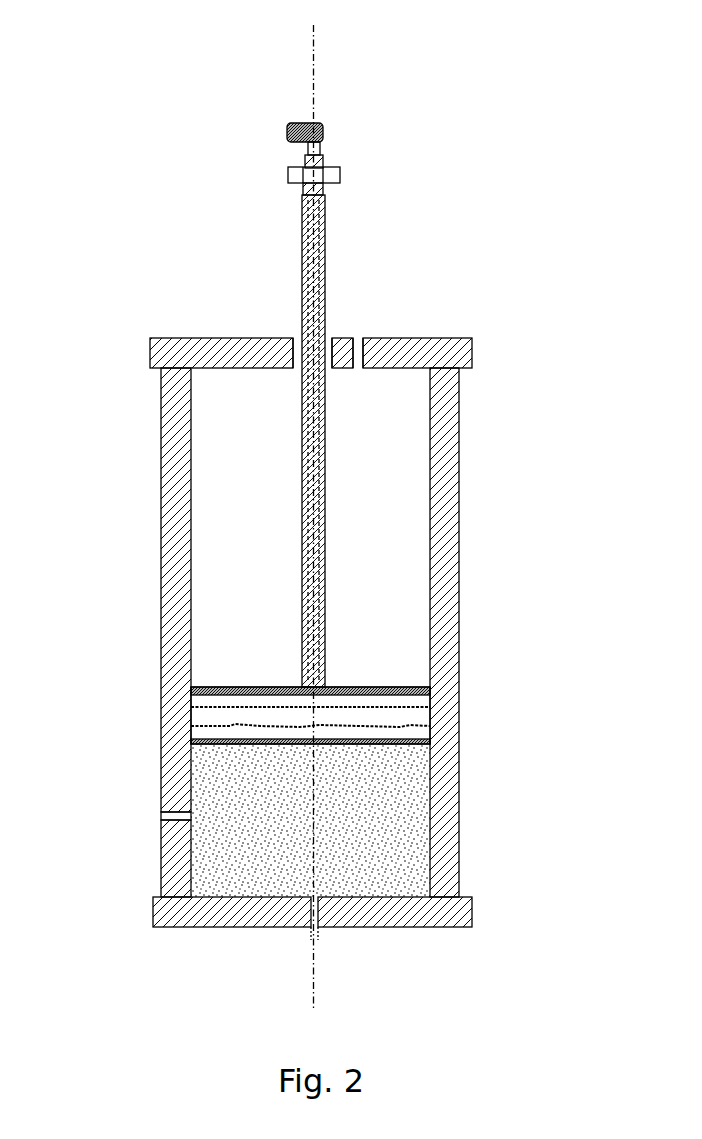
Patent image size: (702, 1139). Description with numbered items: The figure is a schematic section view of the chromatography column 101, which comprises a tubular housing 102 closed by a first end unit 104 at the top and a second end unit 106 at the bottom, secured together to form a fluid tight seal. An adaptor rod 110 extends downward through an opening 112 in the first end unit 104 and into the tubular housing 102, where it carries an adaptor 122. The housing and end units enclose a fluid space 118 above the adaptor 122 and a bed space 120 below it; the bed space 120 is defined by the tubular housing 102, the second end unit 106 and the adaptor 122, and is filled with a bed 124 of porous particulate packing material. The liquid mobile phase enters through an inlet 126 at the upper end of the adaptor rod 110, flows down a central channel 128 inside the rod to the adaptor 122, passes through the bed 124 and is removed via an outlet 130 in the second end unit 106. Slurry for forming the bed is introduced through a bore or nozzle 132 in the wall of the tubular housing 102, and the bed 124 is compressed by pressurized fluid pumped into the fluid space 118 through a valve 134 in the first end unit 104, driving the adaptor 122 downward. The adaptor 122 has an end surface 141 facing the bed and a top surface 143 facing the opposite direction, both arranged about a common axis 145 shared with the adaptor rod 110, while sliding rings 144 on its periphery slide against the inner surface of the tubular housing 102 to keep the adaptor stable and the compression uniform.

The chromatography column 101 is at (370, 141).
The tubular housing 102 is at (458, 532).
The first end unit 104 is at (410, 338).
The second end unit 106 is at (367, 928).
The adaptor rod 110 is at (320, 283).
The opening 112 is at (292, 347).
The fluid space 118 is at (400, 468).
The bed space 120 is at (417, 818).
The adaptor 122 is at (403, 687).
The bed of packing material 124 is at (417, 875).
The inlet 126 is at (283, 130).
The central channel 128 is at (303, 248).
The outlet 130 is at (317, 947).
The bore or nozzle 132 is at (158, 812).
The valve 134 is at (357, 333).
The end surface 141 is at (232, 752).
The top surface 143 is at (220, 692).
The sliding rings 144 is at (192, 698).
The common axis 145 is at (317, 60).